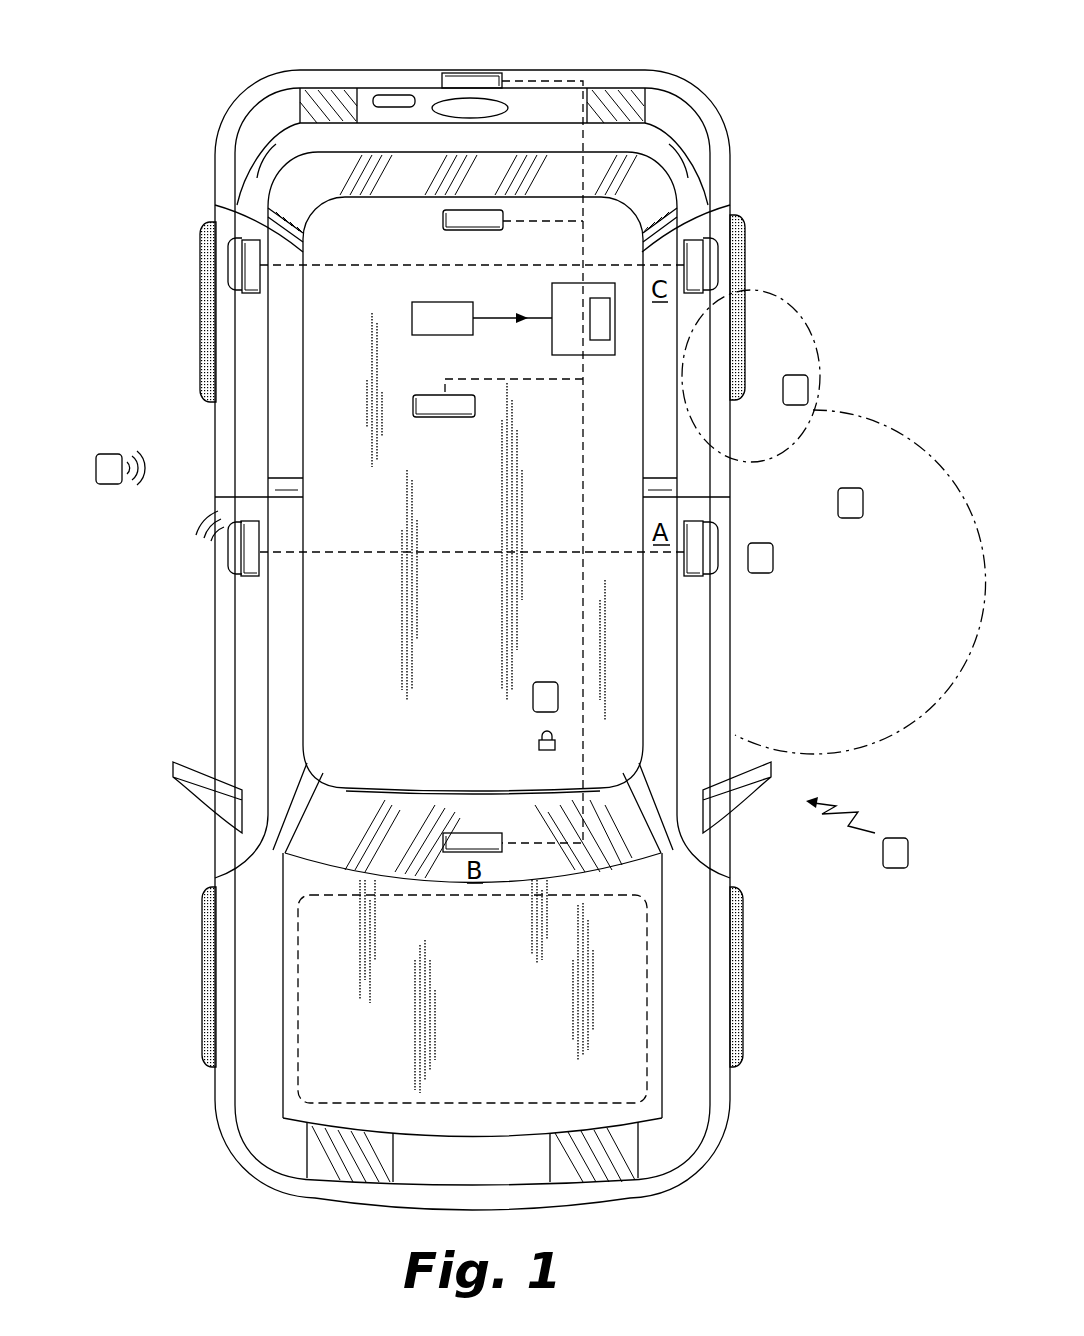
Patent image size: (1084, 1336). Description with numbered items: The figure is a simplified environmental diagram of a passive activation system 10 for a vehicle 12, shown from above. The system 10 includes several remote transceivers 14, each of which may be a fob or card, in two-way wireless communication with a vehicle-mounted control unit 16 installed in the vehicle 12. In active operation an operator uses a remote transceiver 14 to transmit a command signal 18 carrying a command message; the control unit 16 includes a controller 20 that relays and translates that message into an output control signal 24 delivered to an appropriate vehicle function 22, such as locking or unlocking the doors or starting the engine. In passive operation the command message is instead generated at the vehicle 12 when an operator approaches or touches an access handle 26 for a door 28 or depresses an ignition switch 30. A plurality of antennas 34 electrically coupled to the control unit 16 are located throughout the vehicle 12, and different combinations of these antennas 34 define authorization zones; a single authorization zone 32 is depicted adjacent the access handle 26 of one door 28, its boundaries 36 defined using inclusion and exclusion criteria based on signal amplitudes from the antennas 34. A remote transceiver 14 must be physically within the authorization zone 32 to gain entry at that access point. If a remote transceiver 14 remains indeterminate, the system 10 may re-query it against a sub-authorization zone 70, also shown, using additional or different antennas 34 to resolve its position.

The passive activation system 10 is at (748, 30).
The vehicle 12 is at (302, 66).
The remote transceiver 14 is at (808, 385).
The control unit 16 is at (552, 330).
The command signal 18 is at (843, 812).
The controller 20 is at (605, 340).
The vehicle function 22 is at (412, 313).
The output control signal 24 is at (522, 322).
The access handle 26 is at (394, 95).
The door 28 is at (568, 93).
The ignition switch 30 is at (537, 742).
The authorization zone 32 is at (824, 640).
The antenna 34 is at (467, 73).
The boundary 36 is at (800, 318).
The sub-authorization zone 70 is at (788, 359).